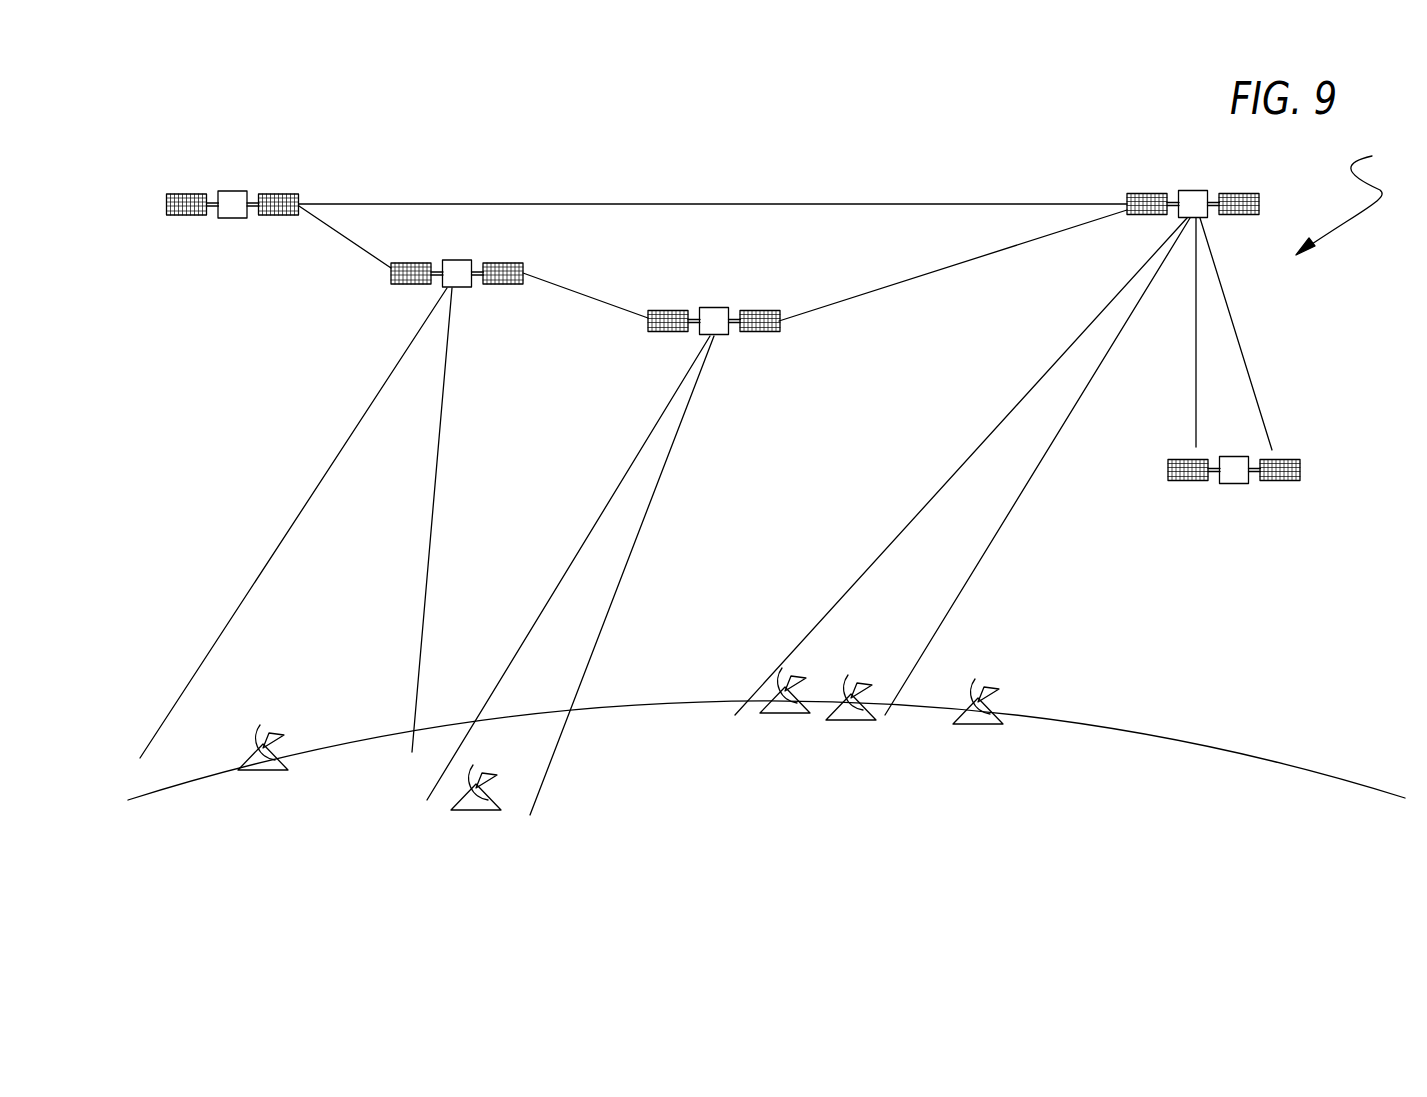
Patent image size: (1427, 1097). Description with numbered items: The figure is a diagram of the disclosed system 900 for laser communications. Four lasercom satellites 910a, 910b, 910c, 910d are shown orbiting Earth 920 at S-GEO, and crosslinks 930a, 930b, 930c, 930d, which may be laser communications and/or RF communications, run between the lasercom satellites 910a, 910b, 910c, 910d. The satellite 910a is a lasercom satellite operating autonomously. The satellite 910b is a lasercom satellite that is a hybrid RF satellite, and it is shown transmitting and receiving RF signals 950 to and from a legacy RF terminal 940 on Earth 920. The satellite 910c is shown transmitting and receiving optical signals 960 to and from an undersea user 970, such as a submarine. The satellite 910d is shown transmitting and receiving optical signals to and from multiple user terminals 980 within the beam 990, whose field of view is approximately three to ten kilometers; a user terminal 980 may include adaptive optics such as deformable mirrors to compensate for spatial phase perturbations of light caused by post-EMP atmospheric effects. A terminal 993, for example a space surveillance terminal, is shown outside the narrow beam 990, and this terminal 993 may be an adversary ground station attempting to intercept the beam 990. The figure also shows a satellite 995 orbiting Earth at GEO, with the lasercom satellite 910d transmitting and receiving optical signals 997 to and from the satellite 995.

The system for laser communications 900 is at (1353, 199).
The lasercom satellite 910a is at (230, 190).
The lasercom satellite 910b is at (410, 284).
The lasercom satellite 910c is at (727, 336).
The lasercom satellite 910d is at (1153, 193).
The Earth 920 is at (1205, 812).
The crosslink 930a is at (700, 204).
The crosslink 930b is at (336, 235).
The crosslink 930c is at (604, 300).
The crosslink 930d is at (890, 285).
The legacy RF terminal 940 is at (267, 735).
The RF signals 950 is at (308, 505).
The optical signals 960 is at (607, 612).
The undersea user 970 is at (476, 812).
The user terminals 980 is at (838, 721).
The beam 990 is at (962, 466).
The terminal 993 is at (985, 695).
The satellite 995 is at (1237, 484).
The optical signals 997 is at (1246, 367).